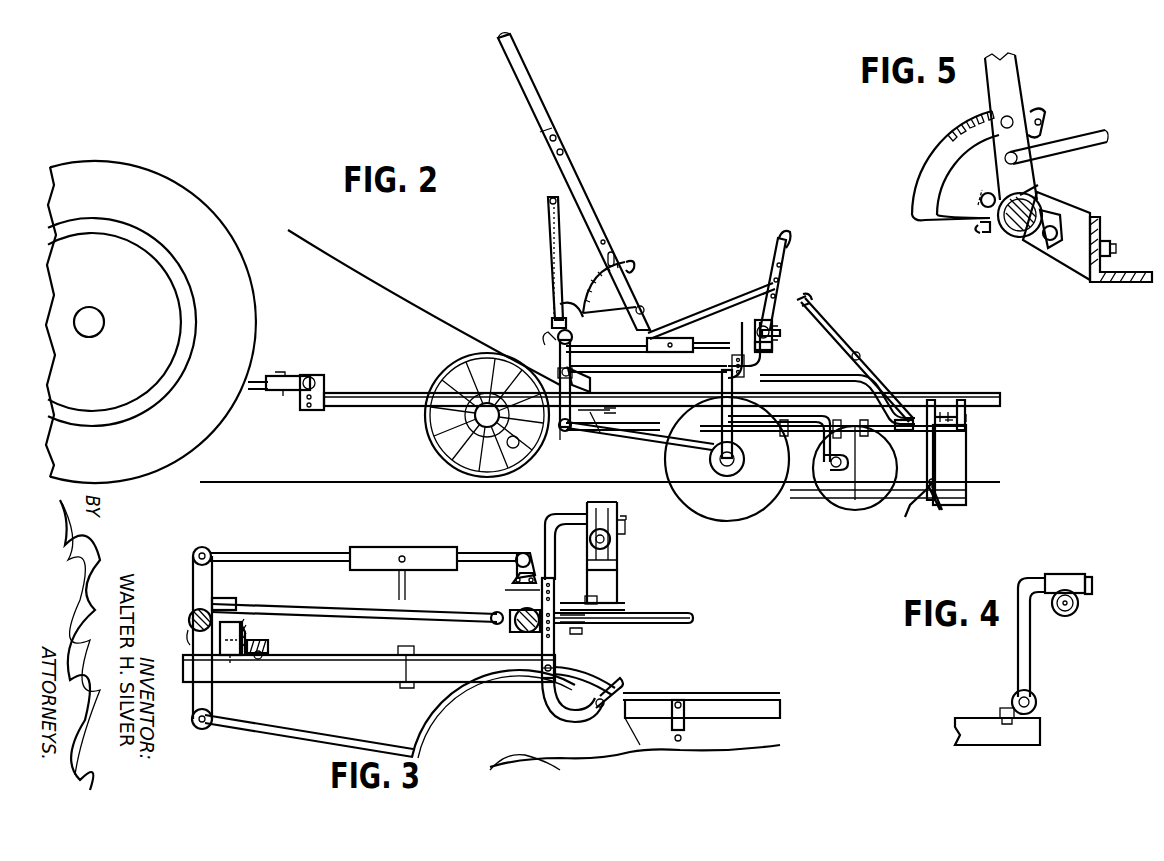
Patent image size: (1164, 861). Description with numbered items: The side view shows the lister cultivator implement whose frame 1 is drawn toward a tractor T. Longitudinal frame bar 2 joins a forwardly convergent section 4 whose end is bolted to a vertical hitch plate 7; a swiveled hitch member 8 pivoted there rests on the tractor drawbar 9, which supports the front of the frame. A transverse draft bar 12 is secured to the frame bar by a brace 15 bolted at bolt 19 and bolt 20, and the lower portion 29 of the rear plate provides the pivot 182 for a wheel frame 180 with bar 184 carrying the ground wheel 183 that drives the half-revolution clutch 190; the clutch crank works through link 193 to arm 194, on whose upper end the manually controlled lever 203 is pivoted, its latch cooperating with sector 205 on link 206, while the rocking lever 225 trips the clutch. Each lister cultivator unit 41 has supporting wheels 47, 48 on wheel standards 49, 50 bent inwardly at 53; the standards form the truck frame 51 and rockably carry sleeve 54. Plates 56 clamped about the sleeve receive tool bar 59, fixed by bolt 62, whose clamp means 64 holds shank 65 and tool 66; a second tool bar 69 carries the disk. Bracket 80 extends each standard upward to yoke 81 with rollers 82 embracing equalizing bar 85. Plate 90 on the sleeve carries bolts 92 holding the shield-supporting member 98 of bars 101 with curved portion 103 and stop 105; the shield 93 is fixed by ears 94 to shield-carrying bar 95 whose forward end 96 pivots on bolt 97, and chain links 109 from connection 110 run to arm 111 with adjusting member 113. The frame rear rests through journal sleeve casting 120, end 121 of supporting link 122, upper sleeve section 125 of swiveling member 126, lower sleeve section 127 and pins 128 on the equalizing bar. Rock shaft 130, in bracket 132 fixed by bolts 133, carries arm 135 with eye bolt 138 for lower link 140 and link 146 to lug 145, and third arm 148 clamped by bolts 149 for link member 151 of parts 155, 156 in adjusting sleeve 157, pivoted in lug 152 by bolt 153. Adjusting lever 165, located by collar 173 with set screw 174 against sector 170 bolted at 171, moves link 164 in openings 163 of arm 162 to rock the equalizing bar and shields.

In FIG. 2, the tractor T is at (151, 159).
In FIG. 2, the frame 1 is at (387, 383).
In FIG. 2, the longitudinal frame bar 2 is at (676, 400).
In FIG. 3, the longitudinal frame bar 2 is at (360, 670).
In FIG. 4, the longitudinal frame bar 2 is at (1005, 738).
In FIG. 2, the forwardly convergent section 4 is at (400, 408).
In FIG. 2, the vertical hitch plate 7 is at (322, 390).
In FIG. 2, the swiveled hitch member 8 is at (292, 376).
In FIG. 2, the drawbar 9 is at (255, 378).
In FIG. 2, the transversely disposed draft bar 12 is at (588, 384).
In FIG. 5, the transversely disposed draft bar 12 is at (1122, 283).
In FIG. 3, the brace 15 is at (326, 657).
In FIG. 3, the bolt 19 is at (258, 640).
In FIG. 3, the bolt 20 is at (407, 646).
In FIG. 2, the lower portion 29 is at (615, 428).
In FIG. 2, the lister cultivator unit 41 is at (892, 366).
In FIG. 2, the supporting wheel 47 is at (772, 478).
In FIG. 3, the supporting wheel 48 is at (438, 725).
In FIG. 2, the wheel standard 49 is at (735, 395).
In FIG. 3, the wheel standard 50 is at (540, 662).
In FIG. 3, the truck frame 51 is at (505, 584).
In FIG. 2, the laterally inwardly bent lower end 53 is at (745, 459).
In FIG. 3, the sleeve 54 is at (515, 628).
In FIG. 3, the pair of upper and lower plates 56 is at (573, 603).
In FIG. 2, the tool bar 59 is at (832, 376).
In FIG. 3, the tool bar 59 is at (664, 612).
In FIG. 3, the bolt 62 is at (600, 600).
In FIG. 2, the clamp means 64 is at (960, 404).
In FIG. 2, the cultivator shank 65 is at (950, 426).
In FIG. 2, the shovel or tool 66 is at (938, 505).
In FIG. 2, the tool bar 69 is at (802, 424).
In FIG. 2, the bracket 80 is at (772, 386).
In FIG. 3, the bracket 80 is at (620, 586).
In FIG. 2, the yoke 81 is at (768, 353).
In FIG. 3, the yoke 81 is at (620, 545).
In FIG. 2, the rollers 82 is at (774, 340).
In FIG. 3, the rollers 82 is at (600, 520).
In FIG. 3, the equalizing bar 85 is at (590, 539).
In FIG. 4, the equalizing bar 85 is at (1078, 610).
In FIG. 2, the plate 90 is at (720, 360).
In FIG. 3, the plate 90 is at (512, 578).
In FIG. 3, the bolts 92 is at (540, 593).
In FIG. 2, the shield 93 is at (958, 460).
In FIG. 3, the shield 93 is at (735, 695).
In FIG. 2, the ears 94 is at (792, 438).
In FIG. 3, the ears 94 is at (680, 700).
In FIG. 2, the shield-carrying bar 95 is at (843, 418).
In FIG. 3, the shield-carrying bar 95 is at (728, 692).
In FIG. 3, the forward end 96 is at (590, 680).
In FIG. 3, the bolt 97 is at (556, 668).
In FIG. 3, the shield-supporting member 98 is at (540, 702).
In FIG. 3, the bar 101 is at (560, 712).
In FIG. 3, the curved portion 103 is at (593, 727).
In FIG. 3, the stop 105 is at (622, 733).
In FIG. 2, the chain links 109 is at (860, 365).
In FIG. 2, the connection 110 is at (908, 418).
In FIG. 2, the arm 111 is at (790, 308).
In FIG. 2, the adjusting screw-threaded member 113 is at (808, 297).
In FIG. 3, the journal sleeve casting 120 is at (575, 640).
In FIG. 4, the journal sleeve casting 120 is at (1038, 698).
In FIG. 4, the lower laterally outer directed end 121 is at (1036, 708).
In FIG. 4, the supporting link 122 is at (1032, 657).
In FIG. 4, the upper sleeve section 125 is at (1078, 572).
In FIG. 4, the swiveling member 126 is at (1063, 567).
In FIG. 4, the lower sleeve section 127 is at (1054, 612).
In FIG. 4, the pins or cotter keys 128 is at (1093, 578).
In FIG. 2, the rock shaft 130 is at (558, 340).
In FIG. 3, the rock shaft 130 is at (192, 608).
In FIG. 5, the rock shaft 130 is at (1036, 210).
In FIG. 3, the bracket 132 is at (230, 656).
In FIG. 5, the bracket 132 is at (1062, 255).
In FIG. 3, the bolts 133 is at (248, 625).
In FIG. 5, the bolts 133 is at (1112, 246).
In FIG. 3, the arm 135 is at (195, 706).
In FIG. 3, the eye bolt 138 is at (225, 600).
In FIG. 2, the lower link 140 is at (640, 432).
In FIG. 3, the lower link 140 is at (316, 738).
In FIG. 3, the lug section 145 is at (492, 620).
In FIG. 2, the link 146 is at (660, 368).
In FIG. 3, the link 146 is at (349, 609).
In FIG. 2, the third arm 148 is at (572, 360).
In FIG. 3, the third arm 148 is at (197, 548).
In FIG. 3, the clamp bolts 149 is at (186, 630).
In FIG. 2, the link member 151 is at (586, 330).
In FIG. 3, the link member 151 is at (341, 538).
In FIG. 3, the apertured lug 152 is at (520, 552).
In FIG. 3, the bolt 153 is at (545, 545).
In FIG. 3, the link part 155 is at (280, 540).
In FIG. 3, the link part 156 is at (475, 552).
In FIG. 2, the adjusting sleeve 157 is at (670, 338).
In FIG. 3, the adjusting sleeve 157 is at (386, 546).
In FIG. 2, the arm 162 is at (770, 268).
In FIG. 2, the openings 163 is at (783, 240).
In FIG. 2, the link 164 is at (708, 305).
In FIG. 5, the link 164 is at (1083, 130).
In FIG. 2, the adjusting lever 165 is at (550, 250).
In FIG. 5, the adjusting lever 165 is at (1010, 74).
In FIG. 5, the sector 170 is at (950, 190).
In FIG. 5, the bolts 171 is at (980, 215).
In FIG. 5, the collar 173 is at (1030, 190).
In FIG. 5, the set screw 174 is at (984, 234).
In FIG. 2, the wheel frame 180 is at (569, 437).
In FIG. 2, the pivot 182 is at (620, 430).
In FIG. 2, the ground wheel 183 is at (460, 448).
In FIG. 2, the wheel frame bar 184 is at (520, 448).
In FIG. 2, the half-revolution clutch 190 is at (443, 433).
In FIG. 2, the link 193 is at (566, 431).
In FIG. 2, the arm 194 is at (690, 436).
In FIG. 2, the manually controlled lever 203 is at (628, 292).
In FIG. 2, the sector 205 is at (597, 290).
In FIG. 2, the link 206 is at (566, 305).
In FIG. 2, the rocking lever 225 is at (510, 365).